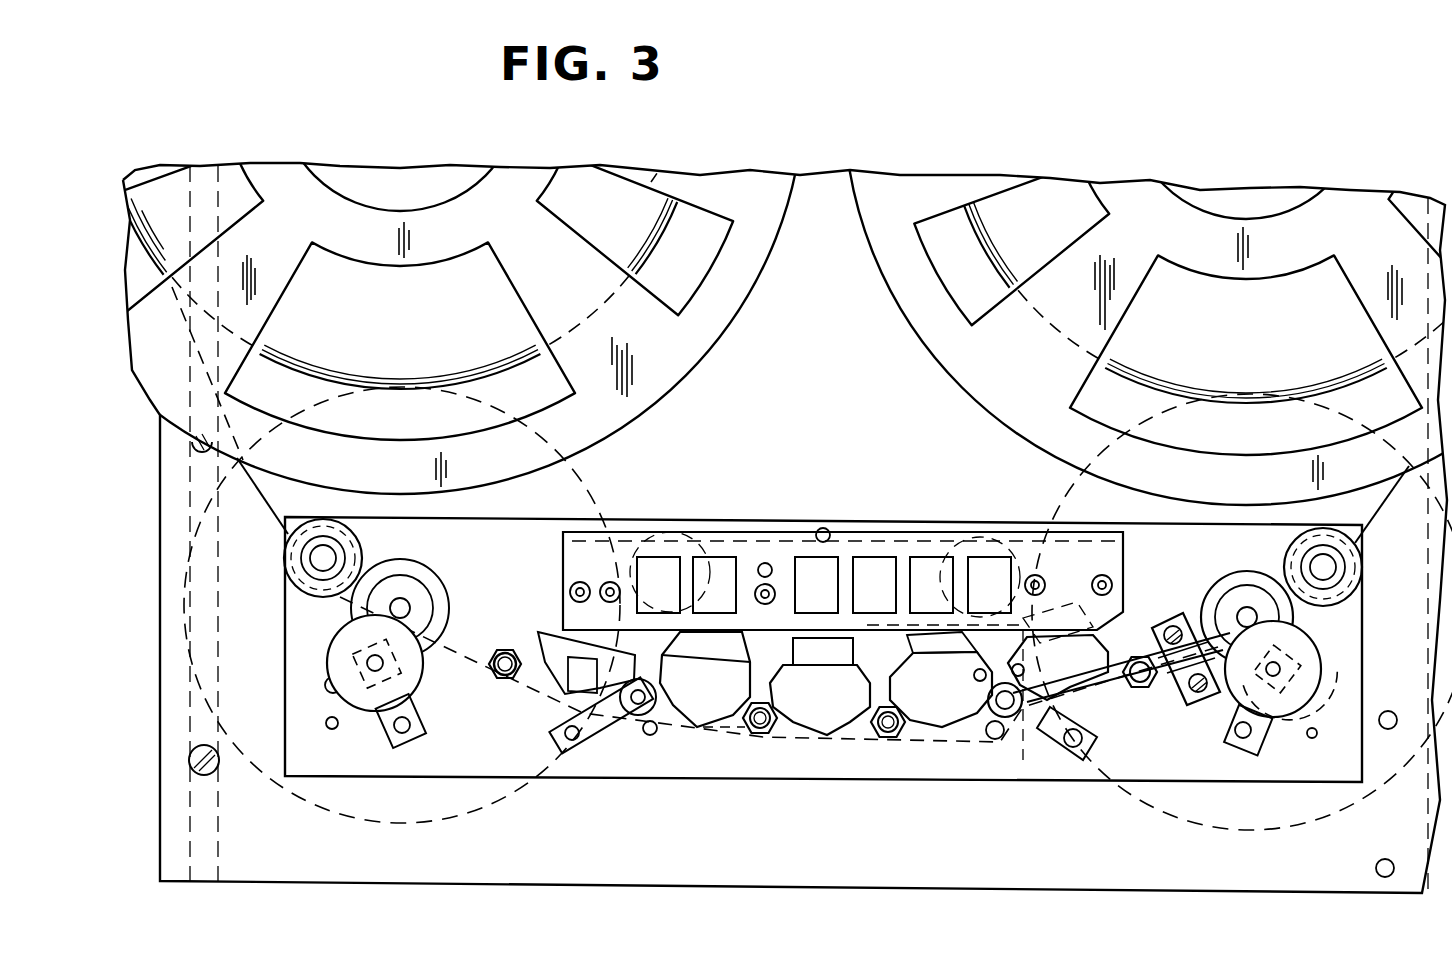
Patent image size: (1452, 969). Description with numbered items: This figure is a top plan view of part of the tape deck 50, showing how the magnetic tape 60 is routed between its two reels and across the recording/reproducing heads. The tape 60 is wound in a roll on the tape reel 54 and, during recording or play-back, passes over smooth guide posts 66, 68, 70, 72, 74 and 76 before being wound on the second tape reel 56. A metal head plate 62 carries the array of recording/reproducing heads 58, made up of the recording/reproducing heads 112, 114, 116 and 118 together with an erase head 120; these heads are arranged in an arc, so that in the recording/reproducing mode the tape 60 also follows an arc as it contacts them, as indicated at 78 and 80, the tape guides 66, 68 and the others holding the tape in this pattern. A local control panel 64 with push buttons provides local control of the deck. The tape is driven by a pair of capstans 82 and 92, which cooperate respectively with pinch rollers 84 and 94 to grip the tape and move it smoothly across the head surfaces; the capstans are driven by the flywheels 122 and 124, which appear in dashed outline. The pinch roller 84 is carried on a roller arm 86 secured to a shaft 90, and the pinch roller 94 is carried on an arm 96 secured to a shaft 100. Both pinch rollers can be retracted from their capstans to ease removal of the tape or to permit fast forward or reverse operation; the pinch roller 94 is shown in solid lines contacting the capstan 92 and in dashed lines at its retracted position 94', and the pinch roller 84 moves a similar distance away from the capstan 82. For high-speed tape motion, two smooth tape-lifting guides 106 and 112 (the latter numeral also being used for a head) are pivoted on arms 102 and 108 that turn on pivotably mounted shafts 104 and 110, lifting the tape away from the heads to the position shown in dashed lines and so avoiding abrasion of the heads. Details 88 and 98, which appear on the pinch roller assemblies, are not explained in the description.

The tape deck 50 is at (148, 688).
The tape reel 54 is at (683, 352).
The second tape reel 56 is at (968, 362).
The recording/reproducing heads 58 is at (797, 790).
The magnetic tape 60 is at (246, 241).
The head plate 62 is at (913, 781).
The local control panel 64 is at (760, 528).
The guide post 66 is at (352, 552).
The guide post 68 is at (505, 648).
The guide post 70 is at (752, 738).
The guide post 72 is at (880, 747).
The guide post 74 is at (1140, 655).
The guide post 76 is at (1300, 513).
The tape arc 78 is at (727, 745).
The tape arc 80 is at (992, 712).
The capstan 82 is at (412, 600).
The pinch roller 84 is at (388, 680).
The roller arm 86 is at (420, 714).
The cam disk hub hole 88 is at (388, 664).
The shaft 90 is at (410, 730).
The capstan 92 is at (1247, 605).
The pinch roller 94 is at (1315, 709).
The retracted pinch roller position 94' is at (1328, 681).
The pinch roller arm 96 is at (1265, 722).
The cam disk hub hole 98 is at (1285, 669).
The shaft 100 is at (1242, 742).
The arm 102 is at (617, 751).
The pivotably-mounted shaft 104 is at (577, 747).
The tape-lifting guide 106 is at (635, 712).
The arm 108 is at (1053, 762).
The pivotably-mounted shaft 110 is at (1112, 714).
The recording/reproducing head 112 is at (680, 690).
The recording/reproducing head 114 is at (801, 696).
The recording/reproducing head 116 is at (920, 685).
The recording/reproducing head 118 is at (1040, 668).
The erase head 120 is at (550, 632).
The flywheel 122 is at (322, 817).
The flywheel 124 is at (1270, 833).